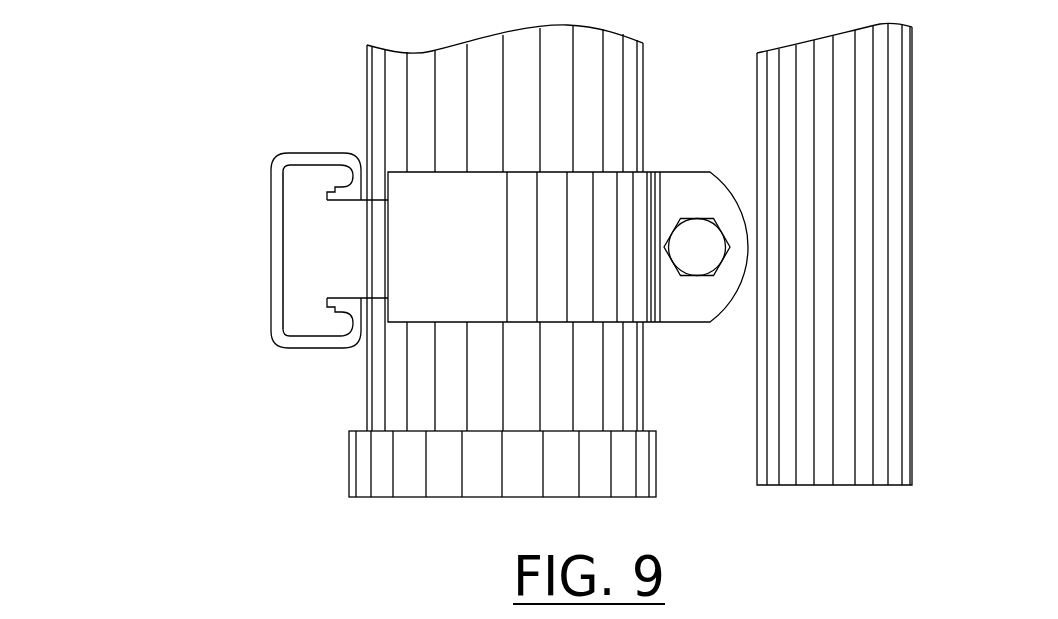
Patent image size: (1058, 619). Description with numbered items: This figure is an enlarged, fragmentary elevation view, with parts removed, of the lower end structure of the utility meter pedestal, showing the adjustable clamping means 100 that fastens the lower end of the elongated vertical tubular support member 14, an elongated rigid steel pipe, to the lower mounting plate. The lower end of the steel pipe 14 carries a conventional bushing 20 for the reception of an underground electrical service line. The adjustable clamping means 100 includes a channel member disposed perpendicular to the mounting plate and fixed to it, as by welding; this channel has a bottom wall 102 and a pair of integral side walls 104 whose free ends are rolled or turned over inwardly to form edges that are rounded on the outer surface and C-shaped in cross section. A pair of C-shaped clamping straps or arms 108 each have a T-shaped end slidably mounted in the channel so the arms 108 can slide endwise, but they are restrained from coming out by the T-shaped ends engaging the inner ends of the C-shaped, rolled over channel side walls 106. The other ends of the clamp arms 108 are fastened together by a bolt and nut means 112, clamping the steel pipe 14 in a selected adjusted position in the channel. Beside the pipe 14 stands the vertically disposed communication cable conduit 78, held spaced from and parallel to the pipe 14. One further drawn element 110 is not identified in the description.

The elongated vertical tubular support member 14 is at (422, 390).
The bushing 20 is at (445, 465).
The communication cable conduit 78 is at (713, 618).
The adjustable clamping means 100 is at (318, 148).
The bottom wall 102 is at (273, 202).
The side walls 104 is at (313, 162).
The C-shaped rolled over channel side walls 106 is at (348, 190).
The C-shaped clamping straps or arms 108 is at (524, 228).
The channel web 110 is at (308, 247).
The bolt and nut means 112 is at (693, 253).